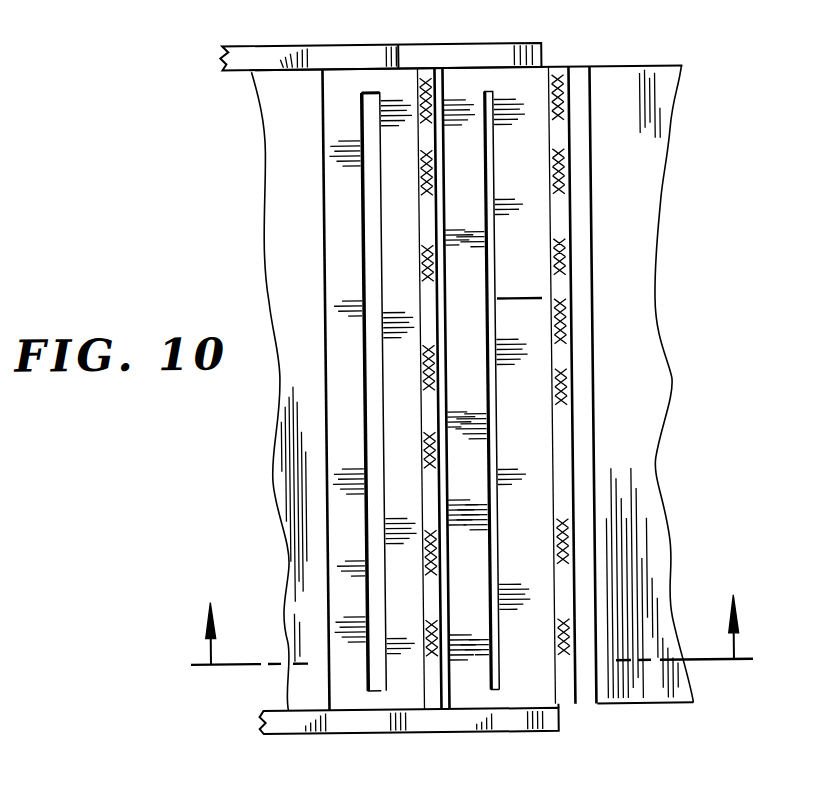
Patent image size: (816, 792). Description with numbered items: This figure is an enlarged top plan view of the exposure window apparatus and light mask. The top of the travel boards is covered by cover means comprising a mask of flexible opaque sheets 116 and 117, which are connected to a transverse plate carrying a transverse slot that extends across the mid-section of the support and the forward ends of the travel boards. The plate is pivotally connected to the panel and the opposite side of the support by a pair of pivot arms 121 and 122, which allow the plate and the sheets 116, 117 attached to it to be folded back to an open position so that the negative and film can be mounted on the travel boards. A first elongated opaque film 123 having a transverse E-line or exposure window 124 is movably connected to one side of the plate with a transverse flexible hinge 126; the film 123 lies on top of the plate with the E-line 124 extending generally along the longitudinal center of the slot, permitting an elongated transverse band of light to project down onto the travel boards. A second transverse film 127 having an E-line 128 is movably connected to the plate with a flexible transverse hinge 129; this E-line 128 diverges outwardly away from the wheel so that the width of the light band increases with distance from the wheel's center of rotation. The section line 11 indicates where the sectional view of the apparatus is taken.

The section line 11- 11 is at (474, 657).
The first panel 116 is at (270, 245).
The second panel 117 is at (653, 462).
The bottom rail 121 is at (363, 723).
The top rail 122 is at (375, 57).
The channel space 123 is at (519, 282).
The right strip 124 is at (490, 192).
The right channel member 126 is at (583, 417).
The panel edge 127 is at (345, 213).
The left strip 128 is at (373, 127).
The center channel member 129 is at (443, 88).